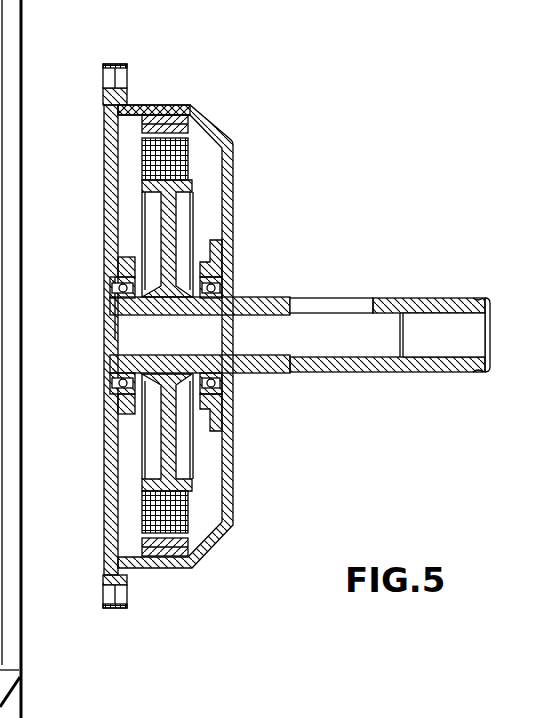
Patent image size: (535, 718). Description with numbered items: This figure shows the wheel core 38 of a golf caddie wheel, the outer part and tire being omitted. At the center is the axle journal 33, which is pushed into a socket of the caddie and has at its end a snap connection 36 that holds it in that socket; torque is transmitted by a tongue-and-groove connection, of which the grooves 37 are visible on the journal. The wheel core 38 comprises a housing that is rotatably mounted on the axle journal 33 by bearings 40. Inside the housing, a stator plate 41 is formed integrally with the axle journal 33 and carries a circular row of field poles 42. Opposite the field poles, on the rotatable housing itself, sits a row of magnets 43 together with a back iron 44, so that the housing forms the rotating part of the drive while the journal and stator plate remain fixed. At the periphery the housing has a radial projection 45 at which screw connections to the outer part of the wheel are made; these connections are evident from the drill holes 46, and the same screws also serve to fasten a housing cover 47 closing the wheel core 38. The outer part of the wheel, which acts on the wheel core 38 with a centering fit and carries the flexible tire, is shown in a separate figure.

The axle journal 33 is at (357, 372).
The snap connection 36 is at (477, 372).
The grooves 37 is at (308, 298).
The wheel core 38 is at (207, 522).
The bearings 40 is at (235, 388).
The stator plate 41 is at (168, 438).
The field poles 42 is at (197, 155).
The magnets 43 is at (173, 127).
The back iron 44 is at (157, 110).
The radial projection 45 is at (118, 105).
The drill holes 46 is at (108, 80).
The housing cover 47 is at (107, 152).